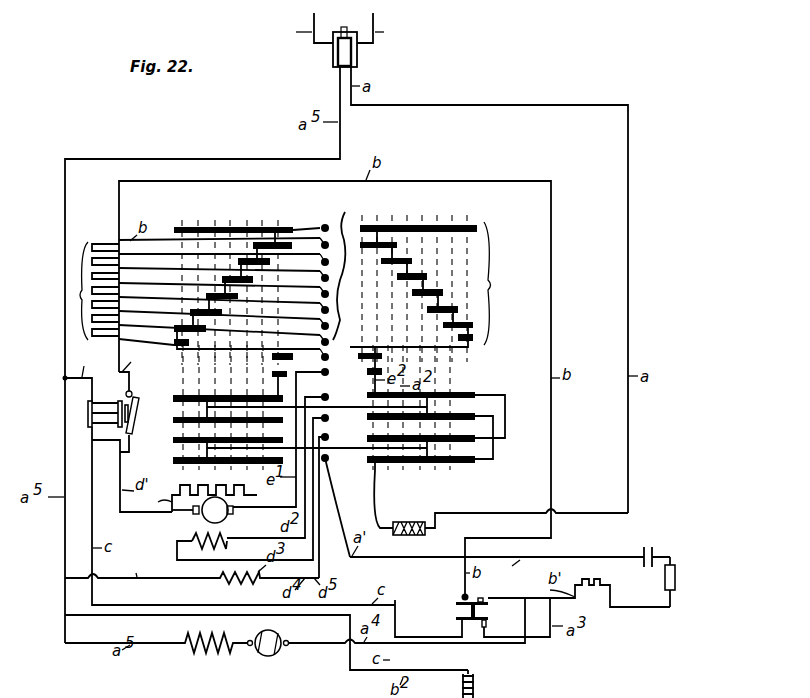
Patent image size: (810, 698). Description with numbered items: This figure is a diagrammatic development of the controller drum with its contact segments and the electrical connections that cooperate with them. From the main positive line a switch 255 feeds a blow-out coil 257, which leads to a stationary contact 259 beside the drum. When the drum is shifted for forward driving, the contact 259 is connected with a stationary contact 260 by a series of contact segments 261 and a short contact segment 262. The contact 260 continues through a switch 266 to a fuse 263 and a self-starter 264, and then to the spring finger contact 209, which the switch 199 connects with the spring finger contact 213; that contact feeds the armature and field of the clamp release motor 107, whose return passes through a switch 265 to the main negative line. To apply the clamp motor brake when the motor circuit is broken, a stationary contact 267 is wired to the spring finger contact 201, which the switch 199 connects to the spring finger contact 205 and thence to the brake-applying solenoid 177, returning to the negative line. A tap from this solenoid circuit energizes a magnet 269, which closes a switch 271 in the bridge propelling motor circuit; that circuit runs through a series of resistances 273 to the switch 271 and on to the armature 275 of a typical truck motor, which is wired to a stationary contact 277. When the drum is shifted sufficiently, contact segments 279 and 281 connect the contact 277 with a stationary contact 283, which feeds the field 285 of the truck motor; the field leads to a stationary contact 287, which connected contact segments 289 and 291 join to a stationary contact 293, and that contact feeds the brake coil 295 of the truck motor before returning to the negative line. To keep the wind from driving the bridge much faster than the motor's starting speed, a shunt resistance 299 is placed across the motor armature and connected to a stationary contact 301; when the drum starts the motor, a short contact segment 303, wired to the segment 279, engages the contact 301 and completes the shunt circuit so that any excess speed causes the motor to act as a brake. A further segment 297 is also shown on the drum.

The clamp release motor 107 is at (295, 632).
The brake-applying solenoid 177 is at (480, 690).
The switch 199 is at (456, 602).
The spring finger contact 201 is at (462, 594).
The spring finger contact 205 is at (486, 598).
The spring finger contact 209 is at (486, 622).
The spring finger contact 213 is at (456, 619).
The switch 255 is at (357, 52).
The blow-out coil 257 is at (425, 520).
The stationary contact 259 is at (322, 225).
The stationary contact 260 is at (340, 350).
The contact segments 261 is at (441, 288).
The short contact segment 262 is at (383, 357).
The fuse 263 is at (677, 580).
The self-starter 264 is at (610, 590).
The switch 265 is at (333, 52).
The switch 266 is at (648, 546).
The stationary contact 267 is at (290, 226).
The magnet 269 is at (88, 413).
The switch 271 is at (139, 398).
The series of resistances 273 is at (80, 291).
The armature 275 is at (226, 518).
The stationary contact 277 is at (325, 396).
The contact segment 279 is at (442, 394).
The contact segment 281 is at (458, 432).
The stationary contact 283 is at (337, 460).
The field 285 is at (198, 535).
The stationary contact 287 is at (340, 460).
The contact segment 289 is at (450, 465).
The contact segment 291 is at (447, 470).
The stationary contact 293 is at (345, 470).
The brake coil 295 is at (220, 580).
The contact bar 297 is at (346, 216).
The shunt resistance 299 is at (300, 416).
The stationary contact 301 is at (298, 373).
The short contact segment 303 is at (383, 372).